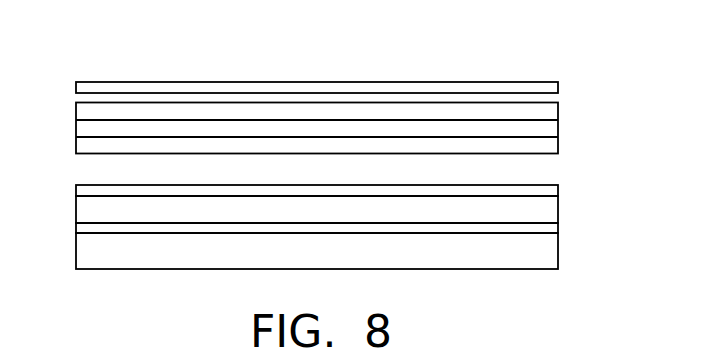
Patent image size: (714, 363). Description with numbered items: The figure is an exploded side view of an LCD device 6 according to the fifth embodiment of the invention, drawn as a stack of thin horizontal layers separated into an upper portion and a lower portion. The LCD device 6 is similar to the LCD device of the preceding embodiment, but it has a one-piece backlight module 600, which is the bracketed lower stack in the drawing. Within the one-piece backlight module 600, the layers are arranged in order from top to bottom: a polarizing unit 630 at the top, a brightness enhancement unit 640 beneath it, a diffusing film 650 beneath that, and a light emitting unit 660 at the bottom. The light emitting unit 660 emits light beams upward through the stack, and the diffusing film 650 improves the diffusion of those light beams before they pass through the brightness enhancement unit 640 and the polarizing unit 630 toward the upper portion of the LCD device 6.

The LCD device 6 is at (282, 54).
The one-piece backlight module 600 is at (68, 180).
The polarizing unit 630 is at (548, 193).
The brightness enhancement unit 640 is at (548, 208).
The diffusing film 650 is at (548, 234).
The light emitting unit 660 is at (548, 261).